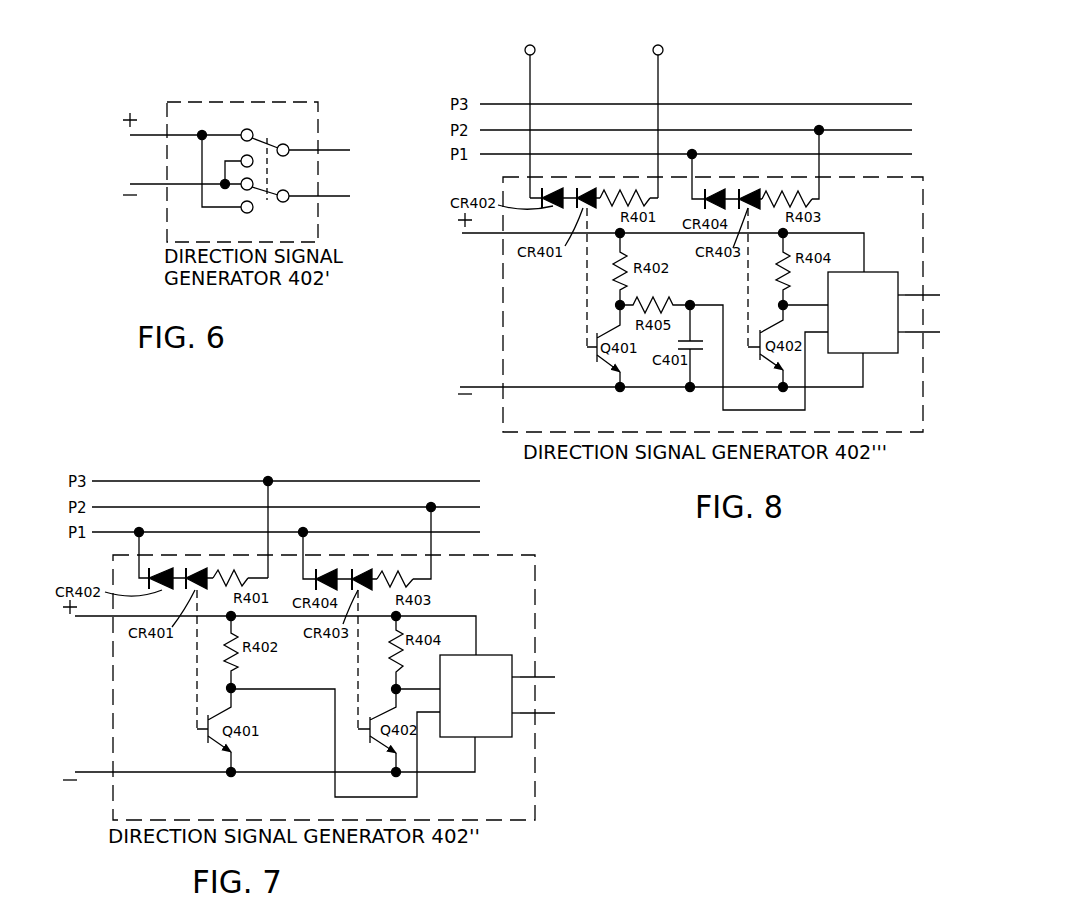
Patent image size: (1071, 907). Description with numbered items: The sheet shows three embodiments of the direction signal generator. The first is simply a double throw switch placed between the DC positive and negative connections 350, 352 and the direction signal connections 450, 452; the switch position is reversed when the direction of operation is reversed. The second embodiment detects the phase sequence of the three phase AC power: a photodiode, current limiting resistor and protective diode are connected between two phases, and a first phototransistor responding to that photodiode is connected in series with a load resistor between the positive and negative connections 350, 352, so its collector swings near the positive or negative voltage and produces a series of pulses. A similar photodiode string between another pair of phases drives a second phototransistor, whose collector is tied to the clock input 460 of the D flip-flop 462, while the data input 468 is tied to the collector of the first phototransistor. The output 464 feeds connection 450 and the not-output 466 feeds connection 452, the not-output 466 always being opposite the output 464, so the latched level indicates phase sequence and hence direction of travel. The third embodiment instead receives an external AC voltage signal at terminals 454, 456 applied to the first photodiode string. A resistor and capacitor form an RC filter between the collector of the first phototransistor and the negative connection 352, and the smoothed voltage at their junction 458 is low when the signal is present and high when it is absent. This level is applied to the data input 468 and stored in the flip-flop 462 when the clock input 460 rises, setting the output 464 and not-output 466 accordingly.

In FIG. 6, the DC positive connection 350 is at (130, 137).
In FIG. 8, the DC positive connection 350 is at (485, 234).
In FIG. 7, the DC positive connection 350 is at (103, 618).
In FIG. 6, the DC negative connection 352 is at (130, 182).
In FIG. 8, the DC negative connection 352 is at (485, 386).
In FIG. 7, the DC negative connection 352 is at (102, 770).
In FIG. 6, the direction signal connection 450 is at (327, 150).
In FIG. 8, the direction signal connection 450 is at (931, 293).
In FIG. 7, the direction signal connection 450 is at (545, 673).
In FIG. 6, the direction signal connection 452 is at (327, 196).
In FIG. 8, the direction signal connection 452 is at (930, 336).
In FIG. 7, the direction signal connection 452 is at (543, 717).
In FIG. 8, the input terminal 454 is at (536, 46).
In FIG. 8, the input terminal 456 is at (664, 46).
In FIG. 8, the junction of C401 and R405 458 is at (693, 300).
In FIG. 8, the clock input 460 is at (824, 304).
In FIG. 7, the clock input 460 is at (437, 687).
In FIG. 8, the D flip-flop 462 is at (851, 324).
In FIG. 7, the D flip-flop 462 is at (464, 707).
In FIG. 8, the output 464 is at (899, 290).
In FIG. 7, the output 464 is at (513, 675).
In FIG. 8, the not-output 466 is at (899, 337).
In FIG. 7, the not-output 466 is at (513, 717).
In FIG. 8, the data input 468 is at (827, 334).
In FIG. 7, the data input 468 is at (438, 714).